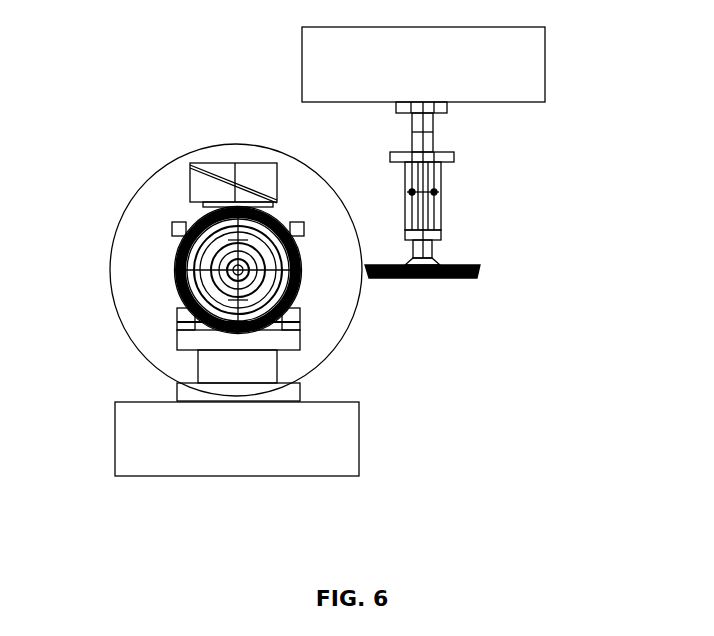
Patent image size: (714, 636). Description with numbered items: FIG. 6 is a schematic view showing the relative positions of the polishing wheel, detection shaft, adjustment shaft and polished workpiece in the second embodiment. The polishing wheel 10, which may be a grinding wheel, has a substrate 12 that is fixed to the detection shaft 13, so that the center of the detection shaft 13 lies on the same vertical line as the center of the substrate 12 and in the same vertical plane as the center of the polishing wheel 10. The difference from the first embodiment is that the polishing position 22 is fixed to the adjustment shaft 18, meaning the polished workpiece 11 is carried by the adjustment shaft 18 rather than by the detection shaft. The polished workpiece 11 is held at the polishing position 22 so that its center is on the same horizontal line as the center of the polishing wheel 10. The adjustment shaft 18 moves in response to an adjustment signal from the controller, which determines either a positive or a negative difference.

The polishing wheel 10 is at (153, 297).
The polished workpiece 11 is at (480, 268).
The substrate 12 is at (293, 395).
The detection shaft 13 is at (322, 447).
The adjustment shaft 18 is at (530, 69).
The polishing position 22 is at (442, 193).